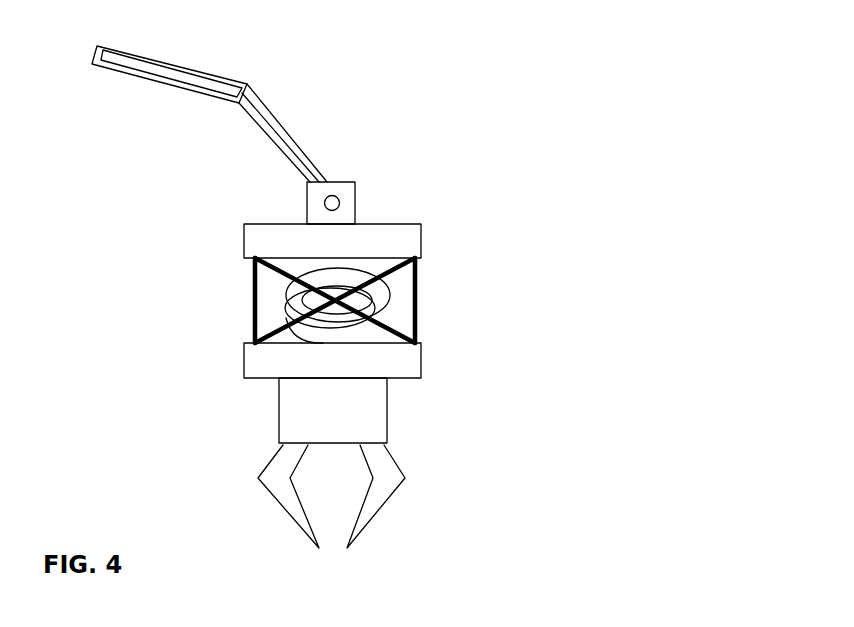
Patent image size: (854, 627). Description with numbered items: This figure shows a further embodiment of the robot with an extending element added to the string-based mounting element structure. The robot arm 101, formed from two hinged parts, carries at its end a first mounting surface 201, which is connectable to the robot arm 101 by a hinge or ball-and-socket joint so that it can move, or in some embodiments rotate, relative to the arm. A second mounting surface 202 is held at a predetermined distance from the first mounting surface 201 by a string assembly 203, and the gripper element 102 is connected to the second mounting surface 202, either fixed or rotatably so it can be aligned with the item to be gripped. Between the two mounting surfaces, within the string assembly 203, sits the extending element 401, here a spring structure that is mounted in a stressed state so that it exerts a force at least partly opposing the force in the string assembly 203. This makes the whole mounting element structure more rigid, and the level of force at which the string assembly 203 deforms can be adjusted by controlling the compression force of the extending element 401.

The robot arm 101 is at (217, 104).
The gripper element 102 is at (406, 463).
The first mounting surface 201 is at (359, 205).
The second mounting surface 202 is at (416, 339).
The string assembly 203 is at (255, 300).
The extending element 401 is at (463, 278).